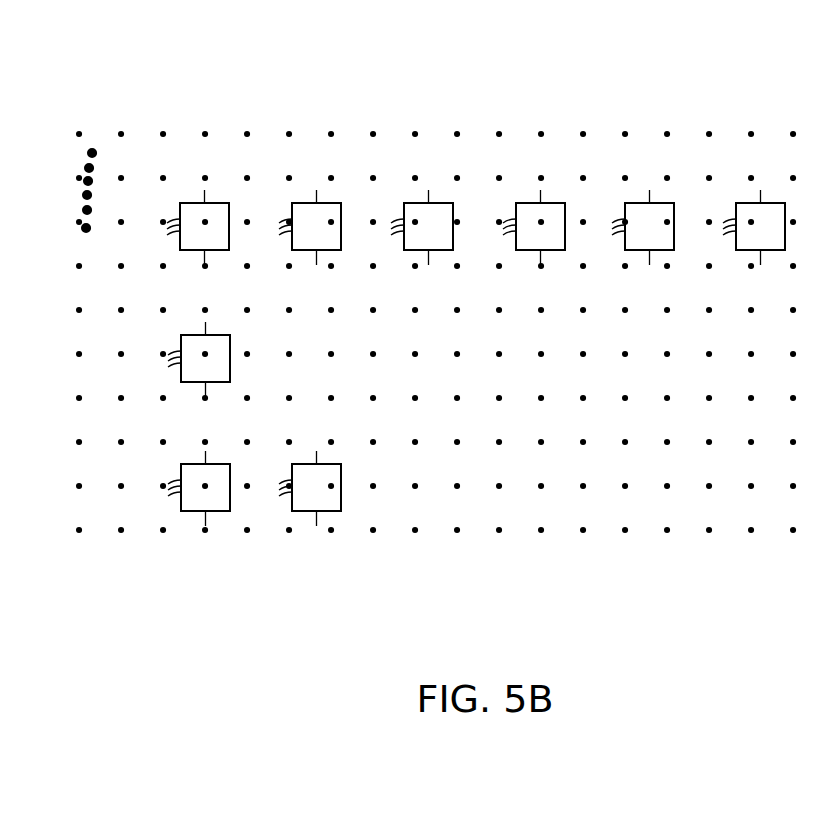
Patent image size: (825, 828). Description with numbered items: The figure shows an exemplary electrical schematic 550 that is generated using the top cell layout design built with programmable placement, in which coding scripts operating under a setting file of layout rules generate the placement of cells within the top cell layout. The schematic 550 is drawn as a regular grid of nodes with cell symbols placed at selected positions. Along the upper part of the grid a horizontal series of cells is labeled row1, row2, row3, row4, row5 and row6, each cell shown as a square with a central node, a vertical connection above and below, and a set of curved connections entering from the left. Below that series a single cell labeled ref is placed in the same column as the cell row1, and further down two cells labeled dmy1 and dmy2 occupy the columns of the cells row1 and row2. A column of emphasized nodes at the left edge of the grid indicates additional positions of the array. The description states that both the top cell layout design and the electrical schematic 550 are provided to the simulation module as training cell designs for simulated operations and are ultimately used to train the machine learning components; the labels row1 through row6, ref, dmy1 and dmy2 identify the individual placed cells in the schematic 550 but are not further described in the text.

The electrical schematic 550 is at (608, 108).
The memory cell of row 1 row1 is at (199, 243).
The memory cell of row 2 row2 is at (311, 243).
The memory cell of row 3 row3 is at (423, 243).
The memory cell of row 4 row4 is at (535, 243).
The memory cell of row 5 row5 is at (644, 243).
The memory cell of row 6 row6 is at (755, 243).
The reference cell ref is at (218, 359).
The dummy cell 1 dmy1 is at (170, 488).
The dummy cell 2 dmy2 is at (345, 488).